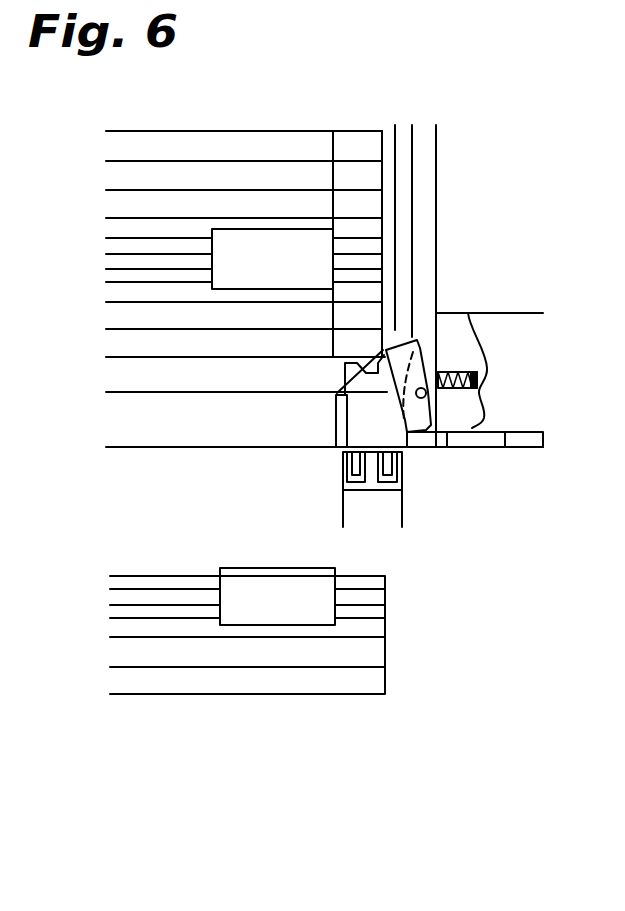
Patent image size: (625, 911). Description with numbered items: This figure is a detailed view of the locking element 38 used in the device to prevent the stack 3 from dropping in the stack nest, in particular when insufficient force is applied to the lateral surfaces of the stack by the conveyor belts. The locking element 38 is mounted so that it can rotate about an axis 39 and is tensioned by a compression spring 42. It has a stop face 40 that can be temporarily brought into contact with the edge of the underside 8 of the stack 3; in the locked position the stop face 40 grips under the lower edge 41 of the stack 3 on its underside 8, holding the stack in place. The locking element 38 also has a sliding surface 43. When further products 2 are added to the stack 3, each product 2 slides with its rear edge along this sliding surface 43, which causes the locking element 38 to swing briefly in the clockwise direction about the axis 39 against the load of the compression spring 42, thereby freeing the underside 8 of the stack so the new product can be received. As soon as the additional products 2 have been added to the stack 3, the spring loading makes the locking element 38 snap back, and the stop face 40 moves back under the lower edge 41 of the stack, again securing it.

The product 2 is at (337, 652).
The stack 3 is at (271, 264).
The underside 8 is at (222, 360).
The locking element 38 is at (418, 342).
The axis 39 is at (422, 399).
The stop face 40 is at (376, 368).
The edge 41 is at (383, 350).
The compression spring 42 is at (477, 380).
The sliding surface 43 is at (380, 386).